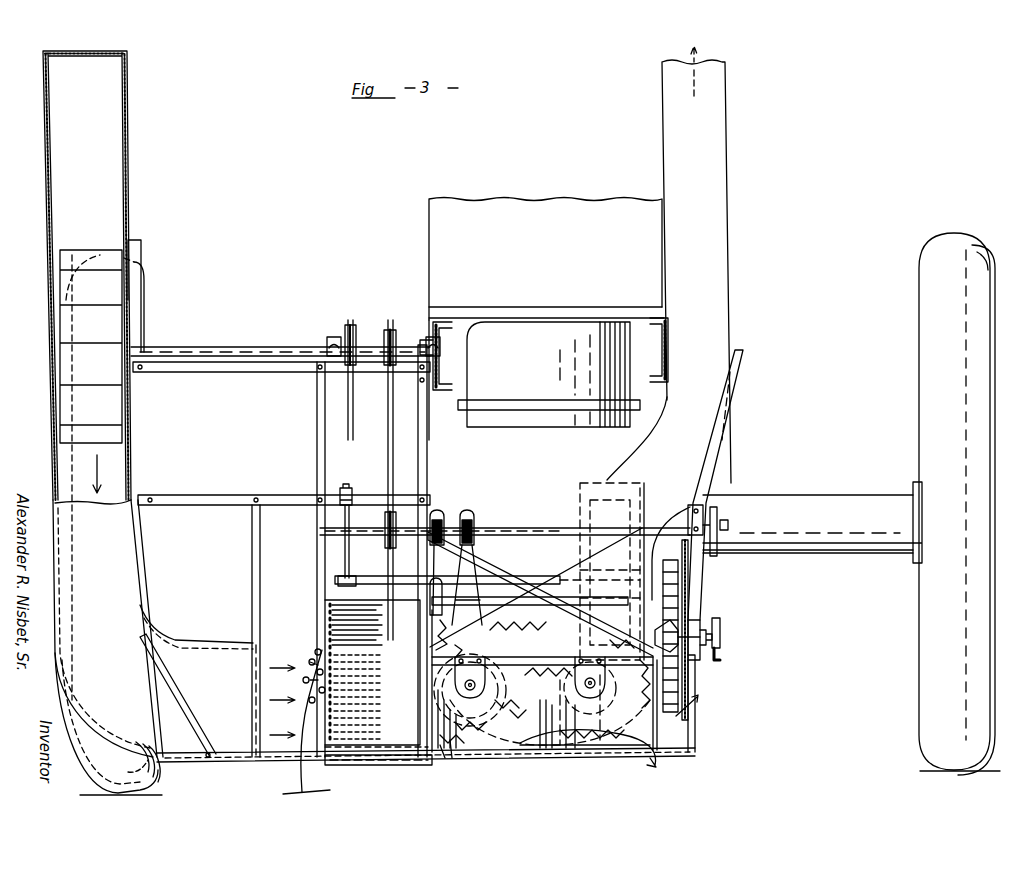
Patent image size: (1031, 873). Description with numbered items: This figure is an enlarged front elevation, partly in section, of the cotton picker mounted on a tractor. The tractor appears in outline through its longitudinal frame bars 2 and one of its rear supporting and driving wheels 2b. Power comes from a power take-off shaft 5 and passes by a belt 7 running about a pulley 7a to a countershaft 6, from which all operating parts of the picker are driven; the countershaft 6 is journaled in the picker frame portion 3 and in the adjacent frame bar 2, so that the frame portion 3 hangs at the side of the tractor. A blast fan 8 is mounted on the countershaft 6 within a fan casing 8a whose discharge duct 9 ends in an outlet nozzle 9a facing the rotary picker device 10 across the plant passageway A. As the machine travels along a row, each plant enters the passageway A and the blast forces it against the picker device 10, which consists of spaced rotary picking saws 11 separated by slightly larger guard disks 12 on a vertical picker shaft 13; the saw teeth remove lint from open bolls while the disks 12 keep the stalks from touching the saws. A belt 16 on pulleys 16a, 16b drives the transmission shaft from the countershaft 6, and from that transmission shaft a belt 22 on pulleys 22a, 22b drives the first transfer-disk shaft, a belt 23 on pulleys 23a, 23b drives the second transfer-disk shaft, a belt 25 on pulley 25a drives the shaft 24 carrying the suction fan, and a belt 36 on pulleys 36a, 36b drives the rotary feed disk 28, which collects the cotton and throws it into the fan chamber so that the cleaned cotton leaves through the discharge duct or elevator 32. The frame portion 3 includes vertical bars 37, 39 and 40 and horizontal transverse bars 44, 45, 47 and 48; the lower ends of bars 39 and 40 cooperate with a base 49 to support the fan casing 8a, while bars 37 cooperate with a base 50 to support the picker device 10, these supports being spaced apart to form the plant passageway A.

The longitudinal bars 2 is at (440, 360).
The rear supporting and driving wheels 2b is at (150, 774).
The frame portion of the picker 3 is at (318, 436).
The power take-off shaft 5 is at (546, 319).
The countershaft 6 is at (256, 345).
The belt 7 is at (347, 405).
The pulley 7a is at (358, 322).
The blast fan 8 is at (70, 358).
The fan casing 8a is at (128, 148).
The discharge duct 9 is at (202, 648).
The outlet nozzle 9a is at (259, 692).
The rotary picker device 10 is at (376, 610).
The picking saws 11 is at (366, 616).
The guard disks 12 is at (366, 632).
The picker shaft 13 is at (328, 552).
The belt 16 is at (389, 448).
The pulley 16a is at (392, 327).
The pulley 16b is at (386, 524).
The belt 22 is at (478, 551).
The pulley 22a is at (476, 528).
The pulley 22b is at (508, 665).
The belt 23 is at (505, 757).
The pulley 23a is at (466, 755).
The pulley 23b is at (591, 753).
The shaft 24 is at (490, 615).
The belt 25 is at (430, 562).
The pulley 25a is at (444, 516).
The rotary feed disk 28 is at (676, 680).
The discharge duct or elevator 32 is at (720, 232).
The belt 36 is at (718, 596).
The pulley 36a is at (720, 508).
The pulley 36b is at (720, 645).
The vertical bars 37 is at (420, 478).
The vertical bars 39 is at (258, 565).
The vertical bars 40 is at (150, 568).
The horizontal transverse bar 44 is at (274, 372).
The horizontal transverse bar 45 is at (227, 497).
The horizontal transverse bar 47 is at (543, 577).
The horizontal transverse bar 48 is at (595, 685).
The base 49 is at (226, 752).
The base 50 is at (398, 763).
The plant passageway A is at (306, 706).